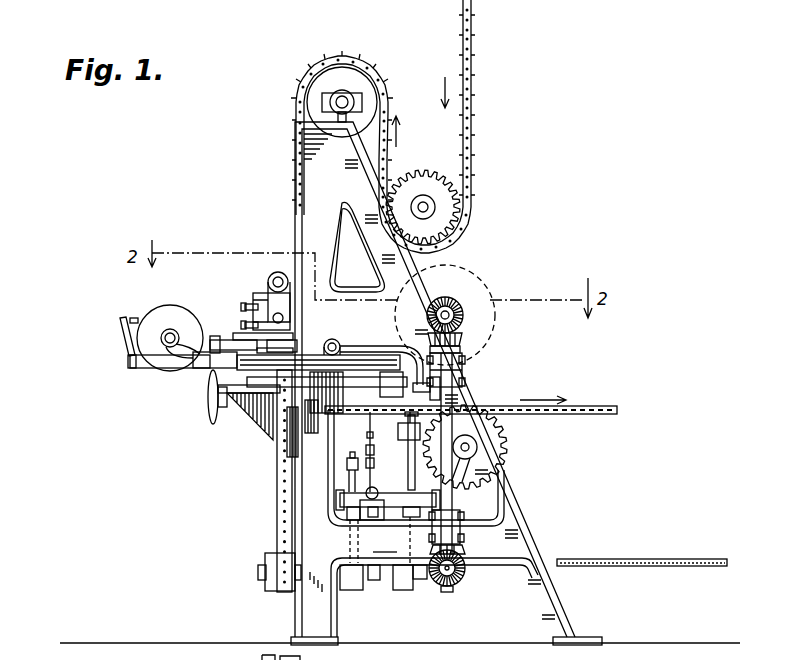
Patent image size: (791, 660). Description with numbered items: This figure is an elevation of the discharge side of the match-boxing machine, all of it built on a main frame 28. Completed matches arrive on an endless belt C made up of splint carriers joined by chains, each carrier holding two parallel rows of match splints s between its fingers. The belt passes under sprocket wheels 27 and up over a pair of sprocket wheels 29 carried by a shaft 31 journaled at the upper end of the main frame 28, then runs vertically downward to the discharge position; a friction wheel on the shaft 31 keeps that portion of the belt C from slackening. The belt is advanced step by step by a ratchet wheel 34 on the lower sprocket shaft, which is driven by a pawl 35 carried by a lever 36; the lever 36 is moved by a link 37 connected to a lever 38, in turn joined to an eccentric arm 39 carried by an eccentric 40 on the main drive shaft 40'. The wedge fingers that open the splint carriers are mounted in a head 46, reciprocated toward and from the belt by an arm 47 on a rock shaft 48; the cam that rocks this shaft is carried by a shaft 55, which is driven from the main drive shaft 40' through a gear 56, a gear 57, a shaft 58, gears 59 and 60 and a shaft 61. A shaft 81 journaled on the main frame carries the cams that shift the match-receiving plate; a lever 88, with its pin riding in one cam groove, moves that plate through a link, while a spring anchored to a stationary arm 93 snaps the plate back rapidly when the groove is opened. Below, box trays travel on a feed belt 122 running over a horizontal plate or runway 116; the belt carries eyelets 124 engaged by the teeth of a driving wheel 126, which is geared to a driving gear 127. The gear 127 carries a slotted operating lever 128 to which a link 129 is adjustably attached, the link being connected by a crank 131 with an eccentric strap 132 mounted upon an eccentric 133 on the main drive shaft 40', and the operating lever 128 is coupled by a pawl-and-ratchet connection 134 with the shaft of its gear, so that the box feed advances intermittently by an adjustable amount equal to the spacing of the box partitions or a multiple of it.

The main frame 28 is at (400, 391).
The belt C is at (473, 70).
The match splints s is at (297, 82).
The sprocket wheels 29 is at (343, 70).
The shaft 31 is at (348, 99).
The drive gear 27 is at (462, 178).
The shaft 55 is at (447, 300).
The gear 56 is at (463, 310).
The gear 57 is at (458, 352).
The pawl-and-ratchet connection 134 is at (458, 374).
The gear 59 is at (462, 549).
The gear 60 is at (462, 576).
The shaft 61 is at (448, 588).
The slotted operating lever 128 is at (450, 411).
The shaft 58 is at (450, 463).
The pawl 35 is at (318, 353).
The lever 36 is at (338, 345).
The rock shaft 48 is at (277, 277).
The head 46 is at (260, 300).
The arm 47 is at (243, 307).
The shaft 81 is at (172, 335).
The lever 88 is at (125, 350).
The stationary arm 93 is at (120, 320).
The plate or runway 116 is at (242, 393).
The driving wheel 126 is at (260, 420).
The driving gear 127 is at (288, 420).
The ratchet wheel 34 is at (300, 435).
The feed belt 122 is at (277, 517).
The eyelets 124 is at (280, 505).
The link 37 is at (370, 430).
The lever 38 is at (351, 466).
The link 129 is at (404, 436).
The crank 131 is at (410, 472).
The eccentric arm 39 is at (350, 513).
The eccentric 40 is at (360, 597).
The eccentric 133 is at (403, 588).
The eccentric strap 132 is at (414, 578).
The main drive shaft 40' is at (642, 550).